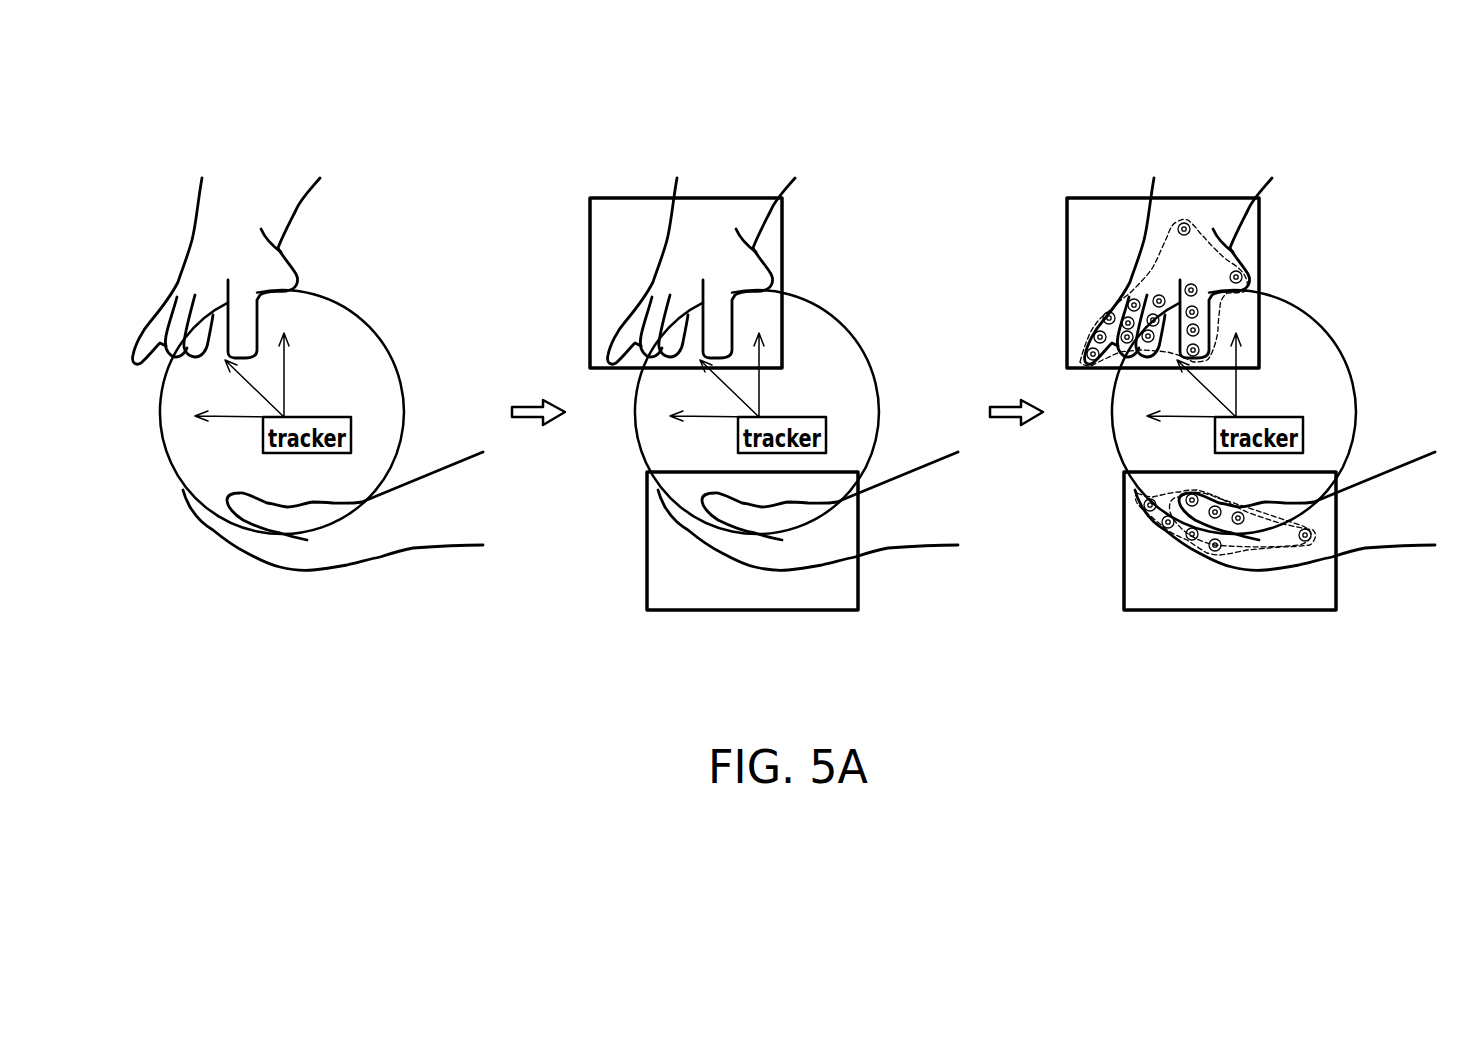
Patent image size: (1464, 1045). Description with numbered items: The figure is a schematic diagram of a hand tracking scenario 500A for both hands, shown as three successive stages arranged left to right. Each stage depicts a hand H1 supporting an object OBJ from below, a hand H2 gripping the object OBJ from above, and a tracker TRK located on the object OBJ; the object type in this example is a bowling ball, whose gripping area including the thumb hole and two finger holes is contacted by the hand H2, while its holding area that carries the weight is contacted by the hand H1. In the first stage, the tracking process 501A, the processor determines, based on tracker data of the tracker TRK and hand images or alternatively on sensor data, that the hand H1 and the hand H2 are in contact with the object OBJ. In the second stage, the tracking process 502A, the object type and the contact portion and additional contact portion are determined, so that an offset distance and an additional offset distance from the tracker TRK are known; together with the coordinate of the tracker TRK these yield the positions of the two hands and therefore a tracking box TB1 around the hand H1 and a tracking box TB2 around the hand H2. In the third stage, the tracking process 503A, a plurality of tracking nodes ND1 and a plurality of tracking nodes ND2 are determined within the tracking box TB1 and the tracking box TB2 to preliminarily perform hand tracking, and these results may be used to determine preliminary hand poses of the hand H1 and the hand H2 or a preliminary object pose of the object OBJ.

The tracking process 501A is at (166, 135).
The tracking process 502A is at (620, 136).
The tracking process 503A is at (1098, 136).
The hand H1 is at (418, 542).
The hand H2 is at (247, 208).
The object OBJ is at (355, 330).
The tracker TRK is at (351, 437).
The tracking box TB1 is at (753, 610).
The tracking box TB2 is at (590, 250).
The tracking nodes ND1 is at (1163, 493).
The tracking nodes ND2 is at (1093, 313).
The hand tracking scenario 500A is at (1447, 715).